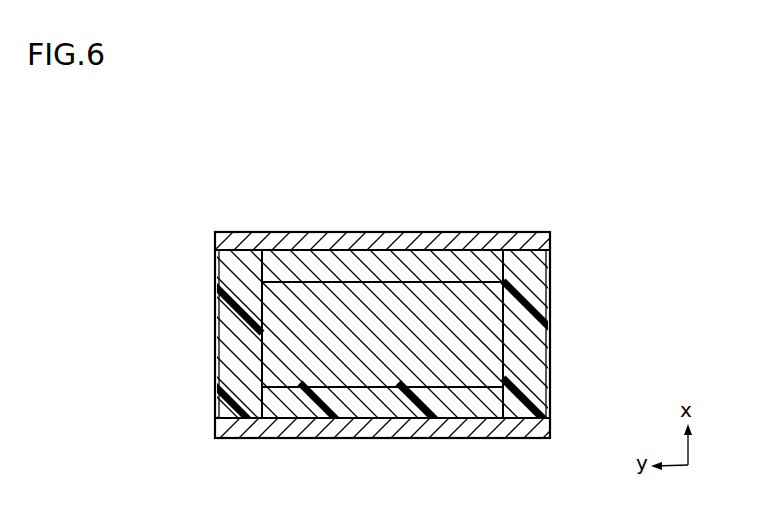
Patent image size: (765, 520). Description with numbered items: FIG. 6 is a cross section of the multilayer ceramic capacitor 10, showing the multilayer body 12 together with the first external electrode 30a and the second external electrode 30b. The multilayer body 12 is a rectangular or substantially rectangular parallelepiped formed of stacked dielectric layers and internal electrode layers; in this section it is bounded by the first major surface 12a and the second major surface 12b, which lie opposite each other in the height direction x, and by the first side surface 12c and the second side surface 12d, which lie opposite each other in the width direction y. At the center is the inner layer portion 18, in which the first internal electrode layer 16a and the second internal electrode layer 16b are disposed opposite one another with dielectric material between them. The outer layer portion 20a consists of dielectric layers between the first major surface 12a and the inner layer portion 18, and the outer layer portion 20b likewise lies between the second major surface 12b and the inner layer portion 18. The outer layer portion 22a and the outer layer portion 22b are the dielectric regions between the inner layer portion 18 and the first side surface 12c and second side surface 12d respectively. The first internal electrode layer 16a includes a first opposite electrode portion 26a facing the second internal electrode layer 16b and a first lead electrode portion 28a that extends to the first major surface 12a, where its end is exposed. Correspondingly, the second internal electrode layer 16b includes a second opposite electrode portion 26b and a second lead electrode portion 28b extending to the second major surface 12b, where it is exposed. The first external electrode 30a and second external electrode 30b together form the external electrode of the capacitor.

The electronic component 10 is at (201, 208).
The multilayer body 12 is at (556, 272).
The first major surface 12a is at (398, 246).
The second major surface 12b is at (331, 420).
The first side surface 12c is at (214, 284).
The second side surface 12d is at (551, 355).
The first internal electrode layer 16a is at (490, 302).
The second internal electrode layer 16b is at (497, 398).
The inner layer portion 18 is at (428, 312).
The outer layer portion 20a is at (343, 268).
The outer layer portion 20b is at (401, 398).
The outer layer portion 22a is at (245, 368).
The outer layer portion 22b is at (527, 327).
The first opposite electrode portion 26a is at (272, 318).
The second opposite electrode portion 26b is at (285, 340).
The first lead electrode portion 28a is at (273, 261).
The second lead electrode portion 28b is at (255, 405).
The first external electrode 30a is at (532, 243).
The second external electrode 30b is at (532, 426).